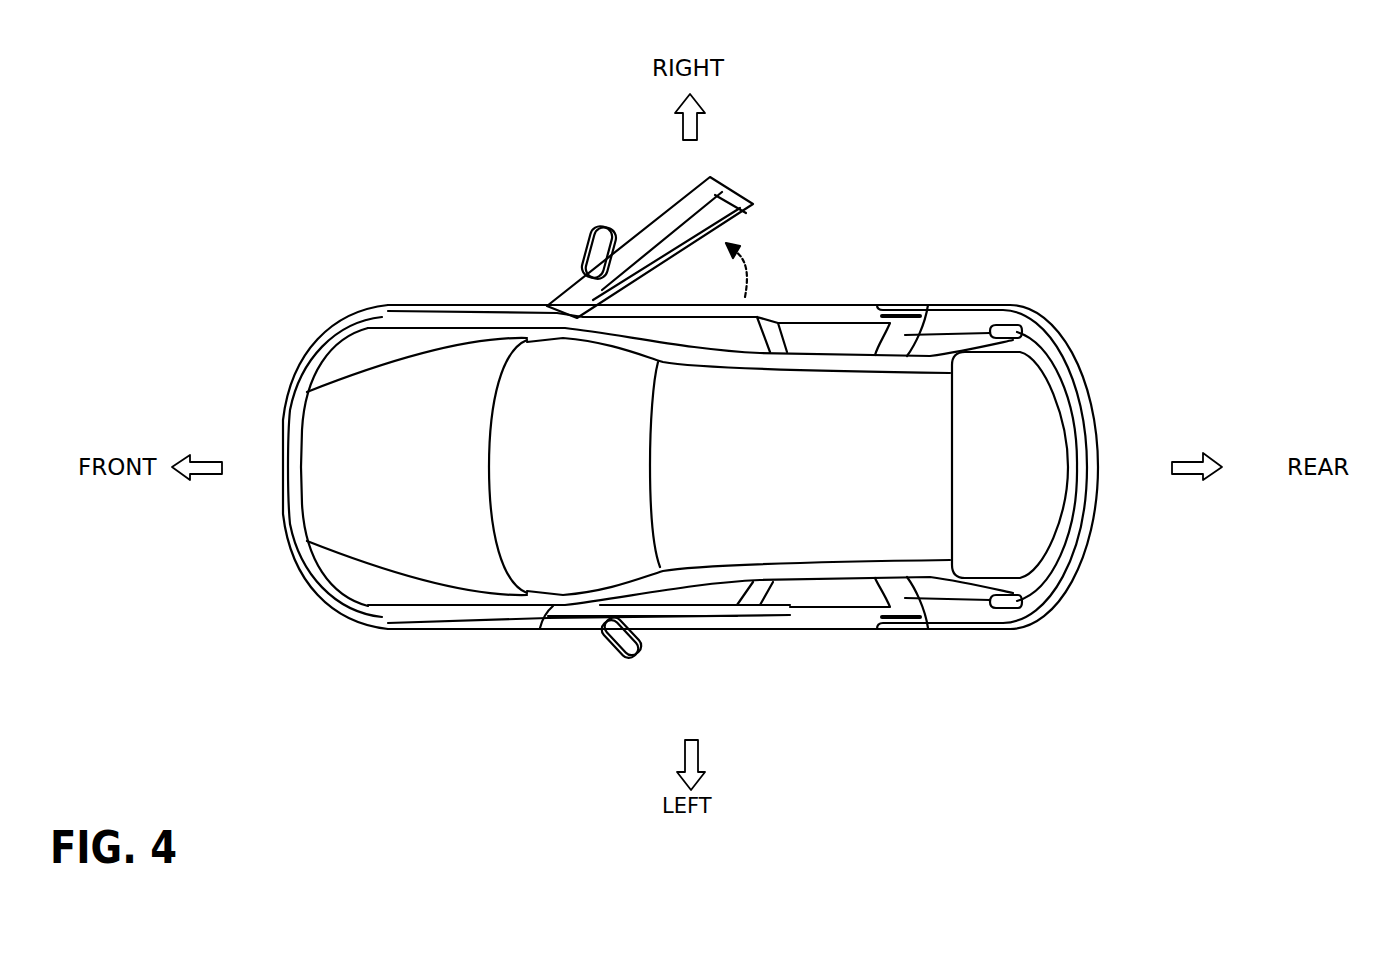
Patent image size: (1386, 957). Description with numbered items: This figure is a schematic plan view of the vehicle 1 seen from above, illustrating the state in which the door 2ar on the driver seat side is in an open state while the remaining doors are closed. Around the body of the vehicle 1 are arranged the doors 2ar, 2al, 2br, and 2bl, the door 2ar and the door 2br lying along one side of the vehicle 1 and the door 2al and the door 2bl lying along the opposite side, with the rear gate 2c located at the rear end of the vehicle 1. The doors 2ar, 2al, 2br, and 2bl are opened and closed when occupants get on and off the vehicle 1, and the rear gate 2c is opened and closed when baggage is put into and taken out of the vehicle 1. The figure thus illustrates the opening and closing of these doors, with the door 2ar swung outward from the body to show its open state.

The vehicle 1 is at (1036, 305).
The door on a driver seat side 2ar is at (683, 200).
The door 2br is at (843, 311).
The door 2al is at (698, 626).
The door 2bl is at (840, 624).
The rear gate 2c is at (1070, 413).